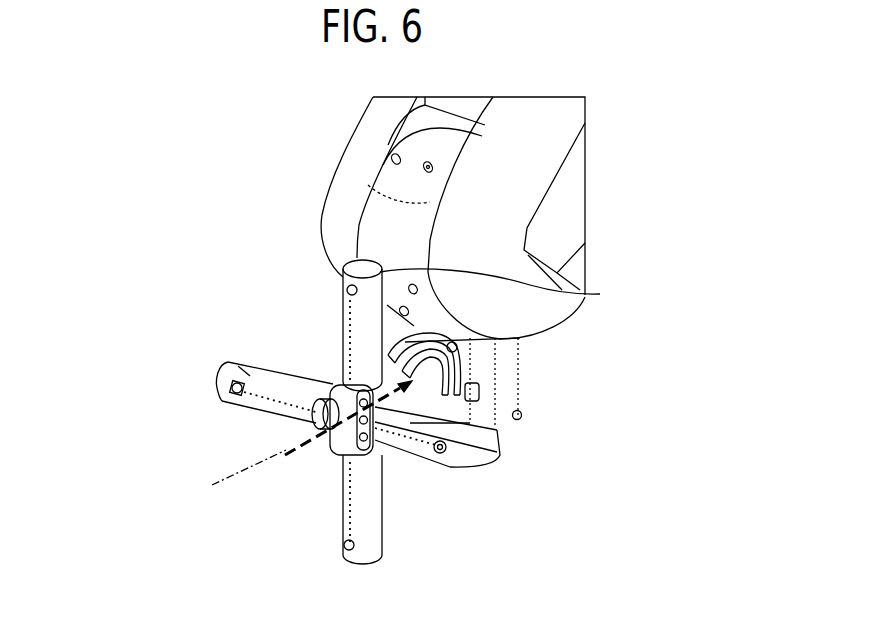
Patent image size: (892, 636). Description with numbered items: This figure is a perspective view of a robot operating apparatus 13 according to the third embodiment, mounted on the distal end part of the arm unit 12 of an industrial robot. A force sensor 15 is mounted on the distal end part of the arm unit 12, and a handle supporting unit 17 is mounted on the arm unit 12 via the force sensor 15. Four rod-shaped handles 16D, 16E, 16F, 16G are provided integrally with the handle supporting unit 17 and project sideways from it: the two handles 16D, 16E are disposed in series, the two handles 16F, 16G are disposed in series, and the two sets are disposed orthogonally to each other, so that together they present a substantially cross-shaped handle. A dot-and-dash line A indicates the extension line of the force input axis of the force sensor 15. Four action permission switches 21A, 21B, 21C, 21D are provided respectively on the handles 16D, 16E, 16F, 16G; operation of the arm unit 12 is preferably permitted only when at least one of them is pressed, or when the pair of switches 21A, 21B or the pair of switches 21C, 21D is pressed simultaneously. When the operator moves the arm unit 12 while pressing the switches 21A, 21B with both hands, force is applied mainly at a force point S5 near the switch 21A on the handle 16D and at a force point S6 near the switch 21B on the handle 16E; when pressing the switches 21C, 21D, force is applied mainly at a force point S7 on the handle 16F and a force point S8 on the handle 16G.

The arm unit 12 is at (361, 154).
The robot operating apparatus 13 is at (528, 436).
The force sensor 15 is at (453, 375).
The rod-shaped handle 16D is at (477, 417).
The rod-shaped handle 16E is at (248, 364).
The rod-shaped handle 16F is at (585, 294).
The rod-shaped handle 16G is at (377, 535).
The handle supporting unit 17 is at (333, 385).
The action permission switch 21A is at (438, 463).
The action permission switch 21B is at (222, 402).
The action permission switch 21C is at (343, 277).
The action permission switch 21D is at (344, 555).
The force point S5 is at (448, 452).
The force point S6 is at (231, 386).
The force point S7 is at (347, 290).
The force point S8 is at (344, 545).
The extension line of force input axis A is at (302, 442).